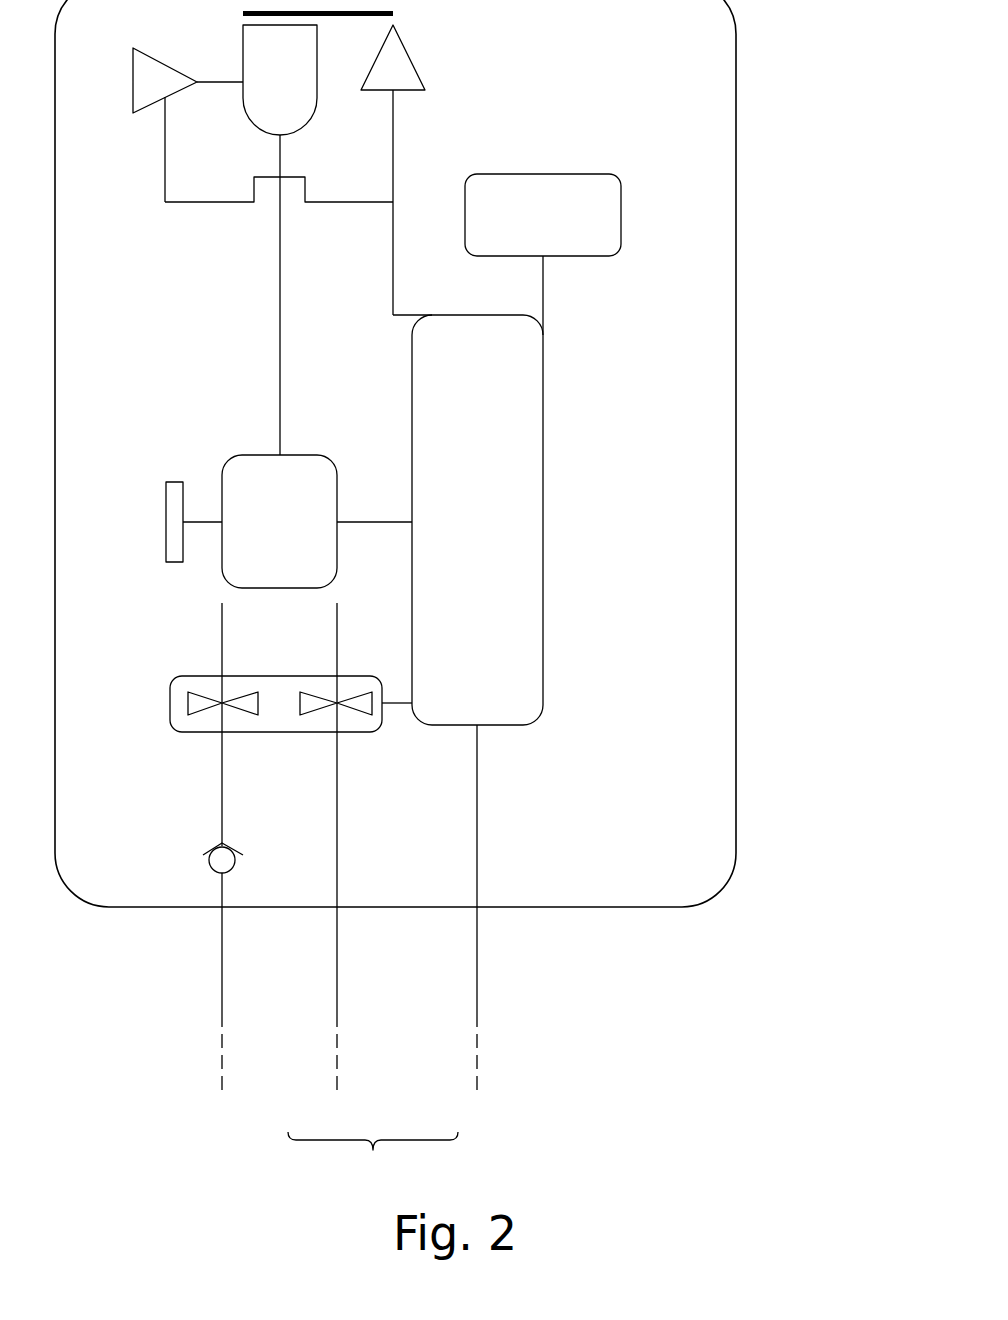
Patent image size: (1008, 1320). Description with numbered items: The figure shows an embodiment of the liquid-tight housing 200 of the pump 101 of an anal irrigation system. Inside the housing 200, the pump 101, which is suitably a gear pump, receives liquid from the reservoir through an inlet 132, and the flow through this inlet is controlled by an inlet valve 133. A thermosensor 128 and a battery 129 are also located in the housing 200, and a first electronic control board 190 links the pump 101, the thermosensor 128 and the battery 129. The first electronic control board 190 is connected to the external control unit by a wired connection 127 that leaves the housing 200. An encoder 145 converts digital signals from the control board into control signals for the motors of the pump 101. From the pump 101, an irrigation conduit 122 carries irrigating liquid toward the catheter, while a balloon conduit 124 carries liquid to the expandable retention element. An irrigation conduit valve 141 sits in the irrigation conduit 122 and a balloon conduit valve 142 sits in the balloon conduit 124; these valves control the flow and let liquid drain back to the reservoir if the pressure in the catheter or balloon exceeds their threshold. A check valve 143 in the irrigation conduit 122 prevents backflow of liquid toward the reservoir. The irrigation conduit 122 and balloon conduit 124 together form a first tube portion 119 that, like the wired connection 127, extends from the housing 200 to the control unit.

The housing 200 is at (736, 273).
The inlet 132 is at (280, 80).
The inlet valve 133 is at (188, 125).
The thermosensor 128 is at (397, 65).
The battery 129 is at (543, 254).
The first electronic control board 190 is at (477, 520).
The pump 101 is at (317, 521).
The encoder 145 is at (166, 499).
The irrigation conduit valve 141 is at (198, 695).
The balloon conduit valve 142 is at (355, 710).
The check valve 143 is at (210, 868).
The irrigation conduit 122 is at (222, 985).
The balloon conduit 124 is at (337, 985).
The wired connection 127 is at (477, 985).
The first tube portion 119 is at (373, 1158).